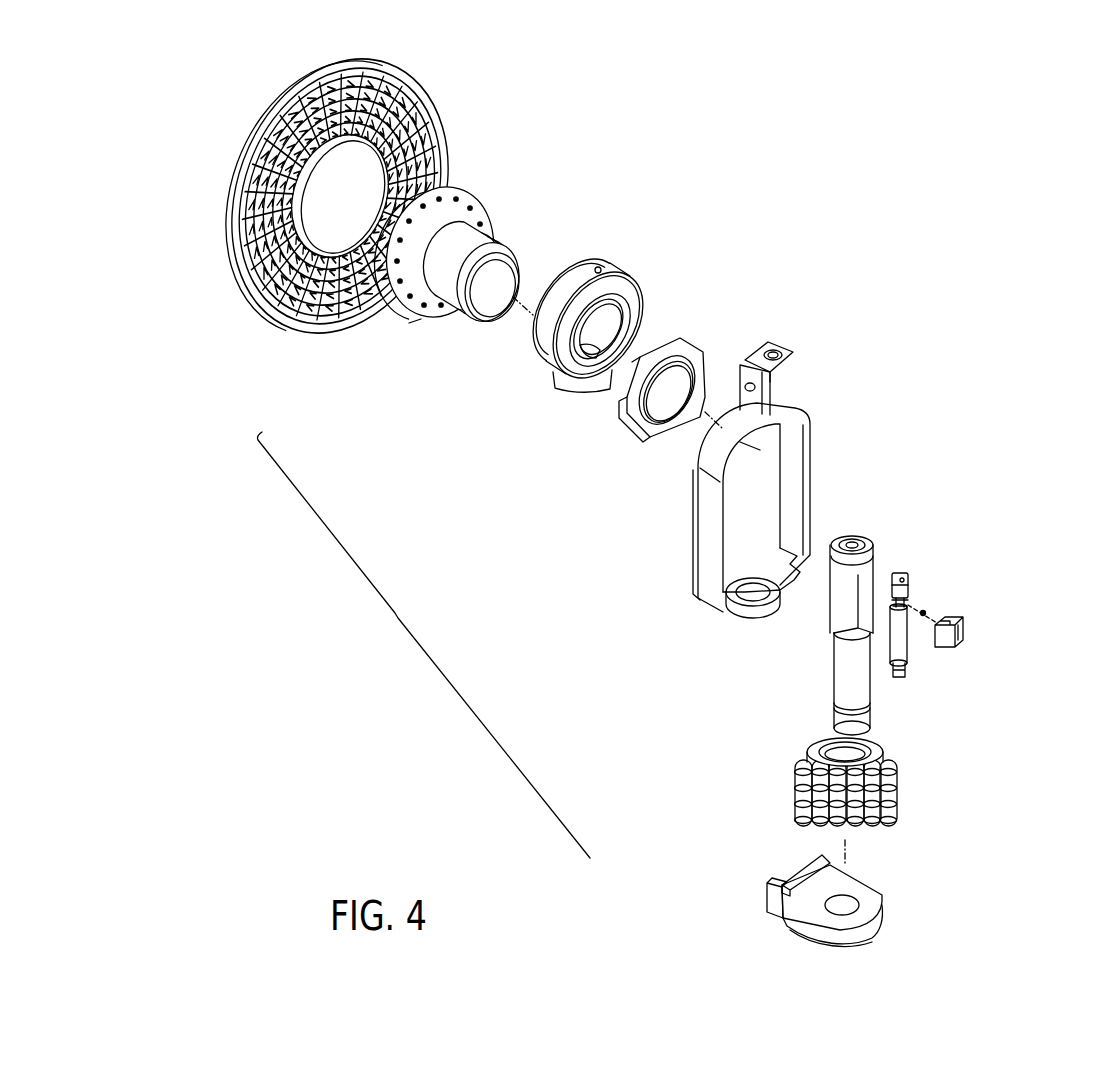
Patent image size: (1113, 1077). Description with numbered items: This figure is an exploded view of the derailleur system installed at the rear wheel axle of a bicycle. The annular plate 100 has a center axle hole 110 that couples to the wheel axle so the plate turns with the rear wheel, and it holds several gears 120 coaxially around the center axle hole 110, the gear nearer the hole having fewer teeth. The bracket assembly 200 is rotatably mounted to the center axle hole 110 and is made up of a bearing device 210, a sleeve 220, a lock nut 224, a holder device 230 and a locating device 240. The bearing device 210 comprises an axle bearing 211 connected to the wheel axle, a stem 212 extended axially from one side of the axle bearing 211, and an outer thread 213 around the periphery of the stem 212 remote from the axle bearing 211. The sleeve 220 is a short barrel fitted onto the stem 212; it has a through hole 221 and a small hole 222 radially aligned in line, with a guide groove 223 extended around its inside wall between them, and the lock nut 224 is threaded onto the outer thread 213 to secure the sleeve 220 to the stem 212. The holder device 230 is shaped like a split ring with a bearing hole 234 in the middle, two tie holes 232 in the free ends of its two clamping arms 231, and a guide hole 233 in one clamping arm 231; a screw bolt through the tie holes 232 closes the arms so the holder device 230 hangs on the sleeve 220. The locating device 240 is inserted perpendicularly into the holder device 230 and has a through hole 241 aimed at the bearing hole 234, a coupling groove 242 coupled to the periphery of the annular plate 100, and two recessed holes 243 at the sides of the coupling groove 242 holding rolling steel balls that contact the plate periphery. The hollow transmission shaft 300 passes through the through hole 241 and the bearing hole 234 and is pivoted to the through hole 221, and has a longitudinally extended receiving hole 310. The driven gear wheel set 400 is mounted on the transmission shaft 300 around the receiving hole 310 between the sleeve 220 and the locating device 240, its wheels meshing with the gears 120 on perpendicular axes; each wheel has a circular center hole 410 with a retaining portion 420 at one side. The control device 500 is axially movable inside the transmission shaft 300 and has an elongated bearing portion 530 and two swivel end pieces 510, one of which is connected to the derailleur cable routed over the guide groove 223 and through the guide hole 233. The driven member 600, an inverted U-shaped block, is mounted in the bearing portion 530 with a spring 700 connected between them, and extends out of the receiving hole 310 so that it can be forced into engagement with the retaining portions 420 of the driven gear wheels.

The annular plate 100 is at (373, 204).
The center axle hole 110 is at (322, 232).
The gears 120 is at (453, 90).
The bracket assembly 200 is at (424, 645).
The bearing device 210 is at (435, 298).
The axle bearing 211 is at (470, 200).
The stem 212 is at (462, 245).
The outer thread 213 is at (498, 290).
The sleeve 220 is at (547, 363).
The through hole 221 is at (589, 360).
The small hole 222 is at (601, 268).
The guide groove 223 is at (618, 312).
The lock nut 224 is at (693, 348).
The holder device 230 is at (677, 485).
The clamping arms 231 is at (790, 407).
The tie holes 232 is at (757, 391).
The guide hole 233 is at (787, 336).
The bearing hole 234 is at (753, 598).
The locating device 240 is at (783, 872).
The through hole 241 is at (852, 902).
The coupling groove 242 is at (780, 882).
The recessed holes 243 is at (803, 877).
The transmission shaft 300 is at (928, 603).
The receiving hole 310 is at (877, 583).
The driven gear wheel set 400 is at (902, 800).
The circular center hole 410 is at (893, 783).
The retaining portion 420 is at (863, 735).
The control device 500 is at (972, 589).
The swivel end pieces 510 is at (910, 582).
The bearing portion 530 is at (913, 592).
The driven member 600 is at (962, 627).
The spring 700 is at (925, 610).